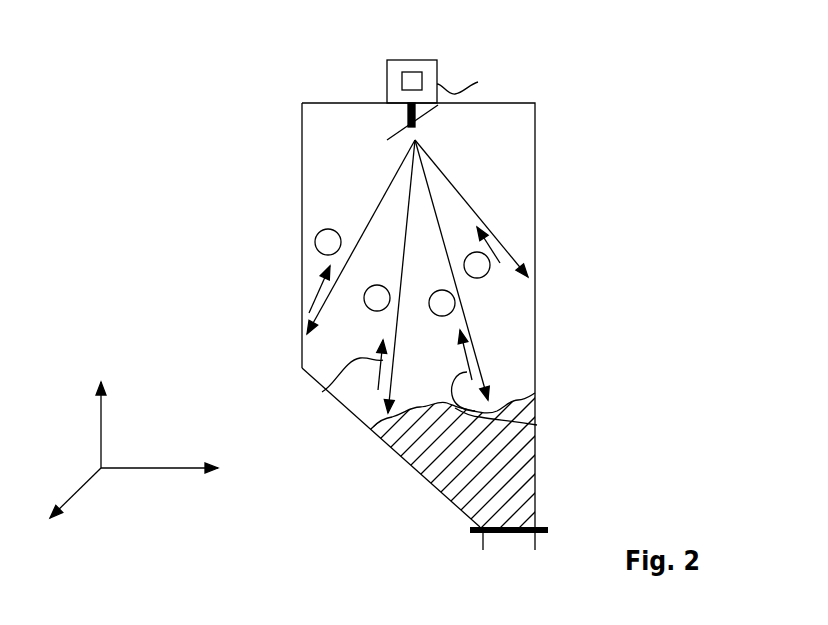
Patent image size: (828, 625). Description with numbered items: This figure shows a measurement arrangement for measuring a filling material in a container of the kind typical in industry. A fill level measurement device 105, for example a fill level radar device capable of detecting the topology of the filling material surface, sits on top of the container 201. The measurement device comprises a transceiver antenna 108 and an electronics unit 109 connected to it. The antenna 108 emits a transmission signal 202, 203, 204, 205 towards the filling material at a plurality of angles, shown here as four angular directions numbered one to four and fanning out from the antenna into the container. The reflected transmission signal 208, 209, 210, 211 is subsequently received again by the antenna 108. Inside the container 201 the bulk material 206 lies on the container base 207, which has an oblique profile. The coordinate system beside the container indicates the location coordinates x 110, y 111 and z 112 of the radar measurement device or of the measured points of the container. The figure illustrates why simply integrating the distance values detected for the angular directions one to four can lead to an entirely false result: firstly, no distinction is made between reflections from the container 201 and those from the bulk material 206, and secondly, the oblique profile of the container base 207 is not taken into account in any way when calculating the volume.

The fill level measurement device 105 is at (424, 60).
The transceiver antenna 108 is at (423, 115).
The electronics unit 109 is at (385, 78).
The location coordinate x 110 is at (143, 468).
The location coordinate y 111 is at (80, 485).
The location coordinate z 112 is at (102, 425).
The container 201 is at (535, 197).
The transmission signal 202 is at (376, 206).
The transmission signal 203 is at (403, 244).
The transmission signal 204 is at (444, 244).
The transmission signal 205 is at (471, 204).
The bulk material 206 is at (522, 399).
The container base 207 is at (513, 533).
The reflected transmission signal 208 is at (316, 289).
The reflected transmission signal 209 is at (322, 391).
The reflected transmission signal 210 is at (537, 425).
The reflected transmission signal 211 is at (500, 263).